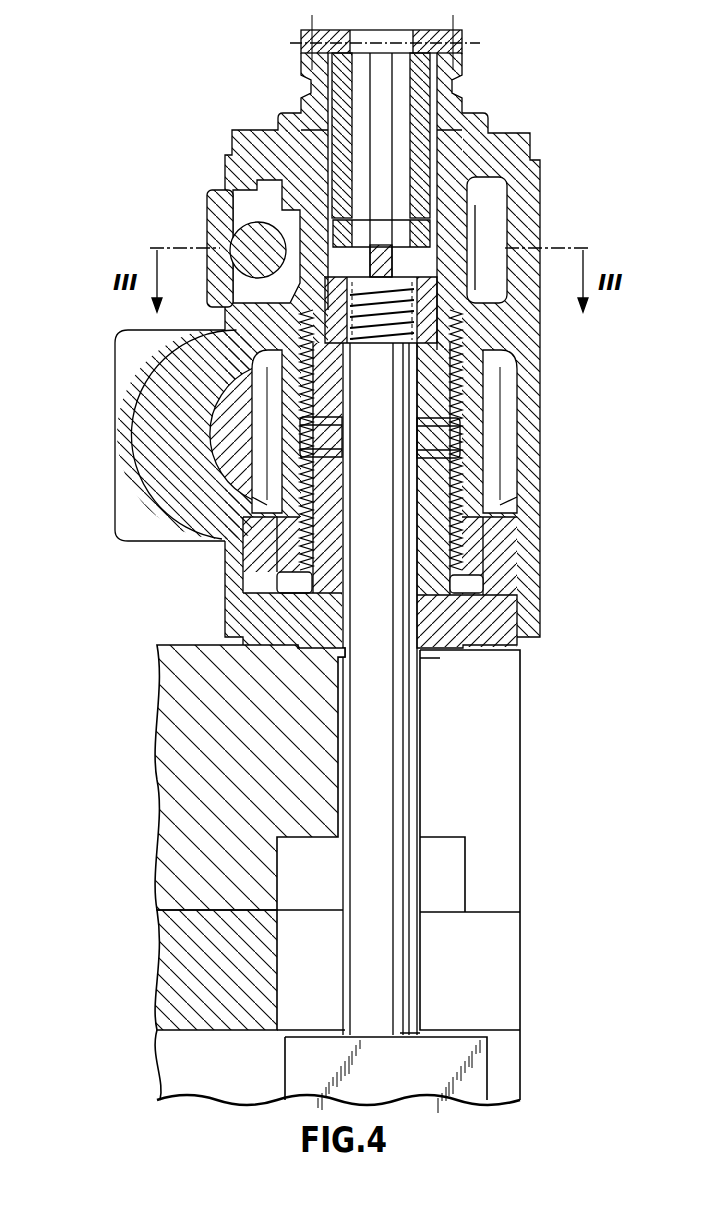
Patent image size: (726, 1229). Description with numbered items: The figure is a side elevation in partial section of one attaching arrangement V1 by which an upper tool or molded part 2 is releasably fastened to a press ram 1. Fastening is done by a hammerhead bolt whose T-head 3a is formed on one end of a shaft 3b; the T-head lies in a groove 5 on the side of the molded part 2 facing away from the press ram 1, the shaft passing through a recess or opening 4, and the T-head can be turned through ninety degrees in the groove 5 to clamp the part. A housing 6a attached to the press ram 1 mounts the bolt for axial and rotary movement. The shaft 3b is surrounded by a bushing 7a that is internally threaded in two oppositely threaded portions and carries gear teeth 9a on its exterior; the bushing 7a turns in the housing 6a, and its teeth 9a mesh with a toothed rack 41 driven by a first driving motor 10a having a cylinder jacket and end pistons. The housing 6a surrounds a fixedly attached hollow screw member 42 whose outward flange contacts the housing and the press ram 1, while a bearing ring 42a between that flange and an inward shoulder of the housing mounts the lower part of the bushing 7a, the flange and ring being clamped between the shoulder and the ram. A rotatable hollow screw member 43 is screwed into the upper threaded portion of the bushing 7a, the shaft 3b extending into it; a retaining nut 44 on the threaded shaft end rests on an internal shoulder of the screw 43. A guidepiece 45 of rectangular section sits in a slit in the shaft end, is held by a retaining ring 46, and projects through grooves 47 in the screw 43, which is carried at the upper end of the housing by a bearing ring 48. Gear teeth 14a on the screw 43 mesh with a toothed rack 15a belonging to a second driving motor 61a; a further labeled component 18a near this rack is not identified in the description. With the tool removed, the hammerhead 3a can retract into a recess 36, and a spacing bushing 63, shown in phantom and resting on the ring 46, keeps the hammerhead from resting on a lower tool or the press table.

The press ram 1 is at (177, 804).
The upper tool or molded part 2 is at (185, 967).
The T-head 3a is at (317, 1068).
The shaft 3b is at (398, 718).
The recess or opening 4 is at (293, 1003).
The groove 5 is at (177, 1064).
The housing 6a is at (234, 591).
The bushing 7a is at (488, 494).
The gear teeth 9a is at (500, 455).
The first driving motor 10a is at (102, 397).
The gear teeth 14a is at (500, 237).
The toothed rack 15a is at (258, 222).
The ball seat 18a is at (222, 225).
The recess 36 is at (455, 869).
The toothed rack 41 is at (177, 458).
The screw member 42 is at (490, 620).
The bearing ring 42a is at (513, 548).
The rotatable hollow screw member 43 is at (473, 387).
The retaining nut 44 is at (432, 330).
The guidepiece 45 is at (372, 258).
The retaining ring 46 is at (405, 255).
The grooves 47 is at (377, 70).
The bearing ring 48 is at (505, 145).
The second driving motor 61a is at (147, 235).
The spacing bushing 63 is at (472, 43).
The attaching arrangement V1 is at (126, 562).